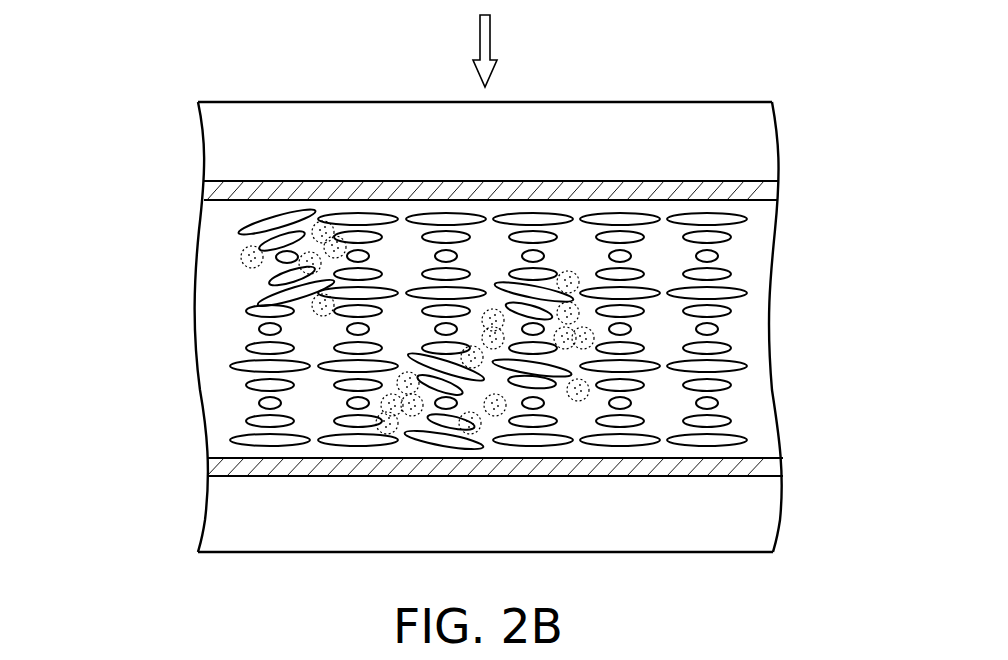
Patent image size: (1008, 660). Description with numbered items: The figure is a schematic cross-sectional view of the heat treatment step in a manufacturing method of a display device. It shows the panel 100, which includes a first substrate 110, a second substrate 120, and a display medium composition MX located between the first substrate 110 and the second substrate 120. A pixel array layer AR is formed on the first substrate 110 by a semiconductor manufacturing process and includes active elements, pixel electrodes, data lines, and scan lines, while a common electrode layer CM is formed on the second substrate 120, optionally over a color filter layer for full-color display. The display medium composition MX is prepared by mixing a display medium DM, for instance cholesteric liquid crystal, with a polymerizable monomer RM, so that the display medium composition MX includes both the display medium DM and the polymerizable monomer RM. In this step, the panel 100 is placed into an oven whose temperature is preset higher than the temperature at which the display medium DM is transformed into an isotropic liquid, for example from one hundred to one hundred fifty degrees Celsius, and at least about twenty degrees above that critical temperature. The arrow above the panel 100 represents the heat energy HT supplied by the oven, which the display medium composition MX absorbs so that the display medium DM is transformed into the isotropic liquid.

The panel 100 is at (467, 317).
The first substrate 110 is at (758, 150).
The second substrate 120 is at (763, 518).
The pixel array layer AR is at (765, 190).
The common electrode layer CM is at (776, 471).
The display medium composition MX is at (101, 30).
The display medium DM is at (735, 292).
The polymerizable monomer RM is at (242, 257).
The heat energy HT is at (491, 32).